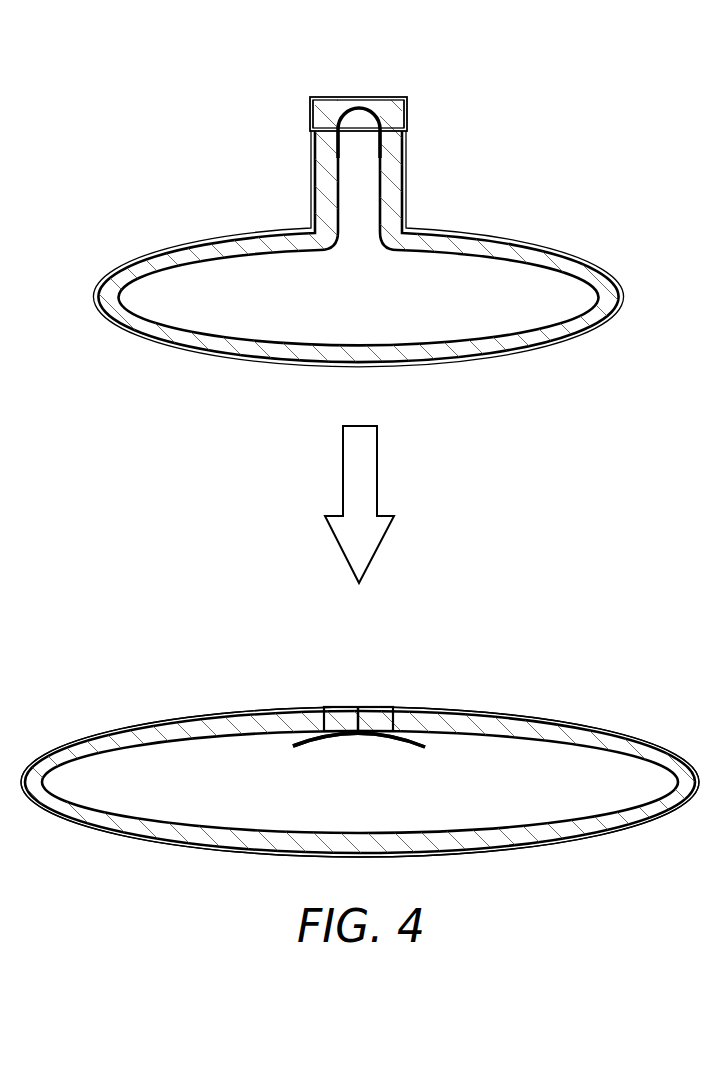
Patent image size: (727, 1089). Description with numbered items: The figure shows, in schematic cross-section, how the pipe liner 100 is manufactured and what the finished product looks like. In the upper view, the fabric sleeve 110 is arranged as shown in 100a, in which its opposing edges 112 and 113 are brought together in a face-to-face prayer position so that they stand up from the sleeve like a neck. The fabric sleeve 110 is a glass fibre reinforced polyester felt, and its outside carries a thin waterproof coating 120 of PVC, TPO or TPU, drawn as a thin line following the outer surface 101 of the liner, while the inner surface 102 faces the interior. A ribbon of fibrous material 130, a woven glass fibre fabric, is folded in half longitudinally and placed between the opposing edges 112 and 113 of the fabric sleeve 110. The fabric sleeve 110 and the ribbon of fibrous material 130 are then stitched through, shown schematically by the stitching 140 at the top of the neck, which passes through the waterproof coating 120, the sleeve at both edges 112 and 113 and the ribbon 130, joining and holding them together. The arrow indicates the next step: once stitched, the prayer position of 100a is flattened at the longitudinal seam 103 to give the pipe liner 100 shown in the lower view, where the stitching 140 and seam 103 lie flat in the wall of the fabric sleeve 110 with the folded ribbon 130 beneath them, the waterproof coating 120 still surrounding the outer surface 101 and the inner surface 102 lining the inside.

The arrangement of pipe liner during manufacture 100a is at (172, 80).
The pipe liner 100 is at (148, 640).
The outer surface 101 is at (440, 228).
The inner surface 102 is at (437, 253).
The longitudinal seam 103 is at (352, 715).
The fabric sleeve 110 is at (495, 246).
The opposing edge 112 is at (393, 103).
The opposing edge 113 is at (325, 103).
The waterproof coating 120 is at (548, 247).
The ribbon of fibrous material 130 is at (327, 147).
The stitching 140 is at (357, 96).